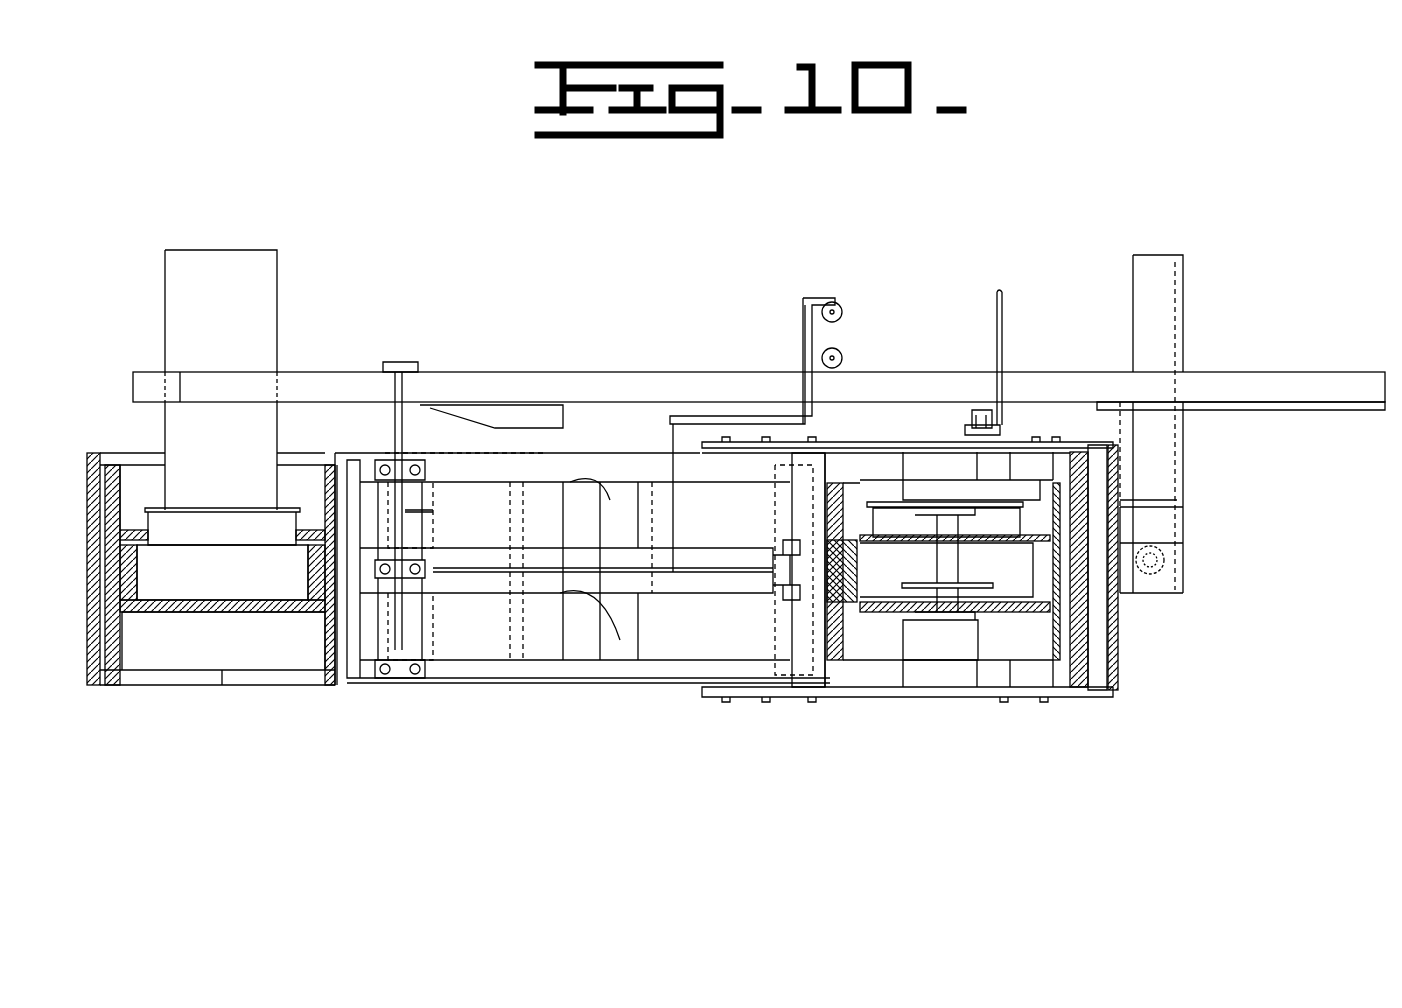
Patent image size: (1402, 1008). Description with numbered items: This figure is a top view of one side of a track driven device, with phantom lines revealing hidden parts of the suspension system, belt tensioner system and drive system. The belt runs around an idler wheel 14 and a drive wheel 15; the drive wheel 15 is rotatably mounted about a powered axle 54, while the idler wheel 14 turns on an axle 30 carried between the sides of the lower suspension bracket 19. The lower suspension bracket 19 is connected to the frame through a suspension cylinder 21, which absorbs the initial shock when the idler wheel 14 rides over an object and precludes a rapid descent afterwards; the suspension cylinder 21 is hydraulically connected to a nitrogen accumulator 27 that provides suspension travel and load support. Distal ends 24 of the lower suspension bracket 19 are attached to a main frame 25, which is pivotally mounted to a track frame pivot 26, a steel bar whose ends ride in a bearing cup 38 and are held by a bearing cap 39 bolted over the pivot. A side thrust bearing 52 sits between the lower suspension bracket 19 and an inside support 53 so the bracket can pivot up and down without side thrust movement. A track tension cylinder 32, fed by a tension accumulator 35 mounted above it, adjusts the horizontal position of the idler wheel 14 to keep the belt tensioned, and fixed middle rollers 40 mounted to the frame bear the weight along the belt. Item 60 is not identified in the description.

The idler wheel 14 is at (877, 726).
The drive wheel 15 is at (180, 706).
The lower suspension bracket 19 is at (922, 448).
The suspension cylinder 21 is at (1175, 610).
The distal ends 24 is at (742, 726).
The main frame 25 is at (530, 668).
The track frame pivot 26 is at (446, 668).
The accumulator 27 is at (843, 360).
The axle 30 is at (945, 567).
The track tension cylinder 32 is at (725, 577).
The tension accumulator 35 is at (843, 314).
The bearing cup 38 is at (420, 640).
The bearing cap 39 is at (400, 571).
The middle rollers 40 is at (690, 500).
The side thrust bearing 52 is at (1005, 392).
The inside support 53 is at (1072, 385).
The powered axle 54 is at (278, 272).
The bracket 60 is at (963, 402).